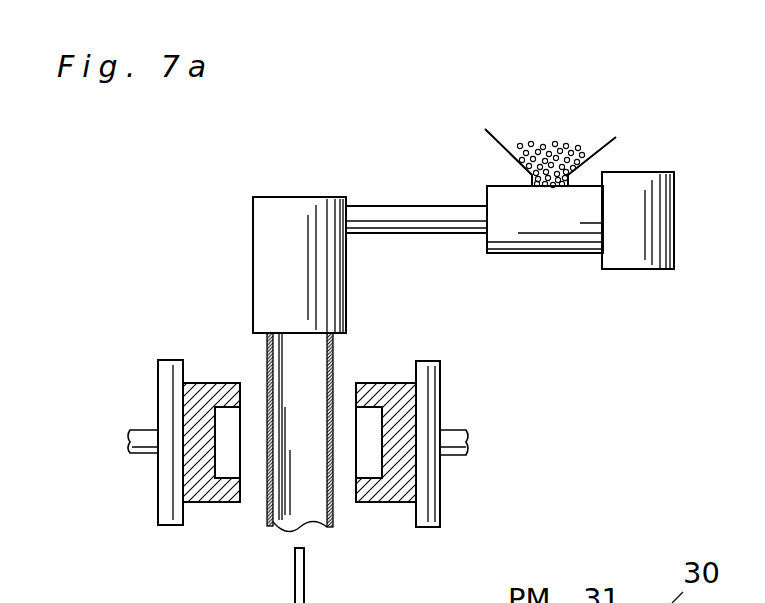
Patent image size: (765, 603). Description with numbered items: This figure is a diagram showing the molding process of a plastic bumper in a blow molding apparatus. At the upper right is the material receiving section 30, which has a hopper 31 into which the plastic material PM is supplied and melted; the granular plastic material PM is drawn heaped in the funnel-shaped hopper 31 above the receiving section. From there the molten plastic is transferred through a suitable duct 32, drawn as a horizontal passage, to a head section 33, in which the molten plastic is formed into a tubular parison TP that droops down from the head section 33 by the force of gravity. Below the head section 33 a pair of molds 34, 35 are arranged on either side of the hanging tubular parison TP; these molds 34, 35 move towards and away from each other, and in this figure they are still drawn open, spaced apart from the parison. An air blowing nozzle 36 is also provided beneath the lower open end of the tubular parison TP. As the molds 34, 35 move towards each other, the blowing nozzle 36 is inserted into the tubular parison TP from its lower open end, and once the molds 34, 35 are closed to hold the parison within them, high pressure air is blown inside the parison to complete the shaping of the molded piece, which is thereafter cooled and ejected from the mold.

The material receiving section 30 is at (632, 172).
The hopper 31 is at (598, 142).
The duct 32 is at (401, 210).
The head section 33 is at (282, 207).
The mold 34 is at (200, 503).
The mold 35 is at (390, 503).
The air blowing nozzle 36 is at (295, 592).
The plastic material PM is at (543, 152).
The tubular parison TP is at (333, 357).